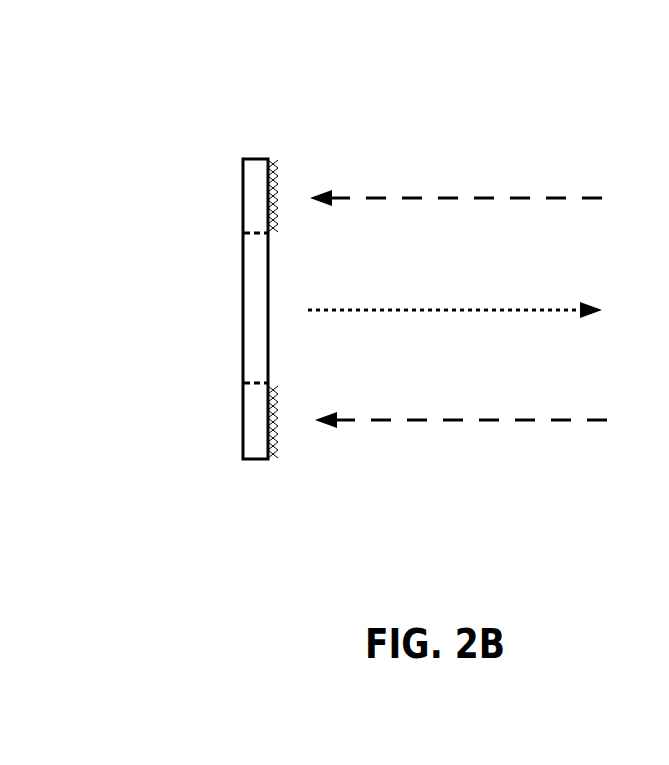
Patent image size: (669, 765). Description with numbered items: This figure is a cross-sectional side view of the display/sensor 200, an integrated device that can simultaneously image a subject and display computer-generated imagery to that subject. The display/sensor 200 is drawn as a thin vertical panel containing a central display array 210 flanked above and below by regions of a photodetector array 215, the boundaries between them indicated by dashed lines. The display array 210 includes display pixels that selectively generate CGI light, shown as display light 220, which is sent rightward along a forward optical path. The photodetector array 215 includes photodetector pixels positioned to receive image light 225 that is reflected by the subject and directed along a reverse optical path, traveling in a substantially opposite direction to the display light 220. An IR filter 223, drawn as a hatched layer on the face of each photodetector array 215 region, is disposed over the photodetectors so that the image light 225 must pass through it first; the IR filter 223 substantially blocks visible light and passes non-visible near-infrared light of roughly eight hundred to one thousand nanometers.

The display/sensor 200 is at (236, 152).
The display array 210 is at (255, 308).
The photodetector array 215 is at (255, 308).
The display light 220 is at (455, 299).
The IR filter 223 is at (340, 502).
The image light 225 is at (462, 296).